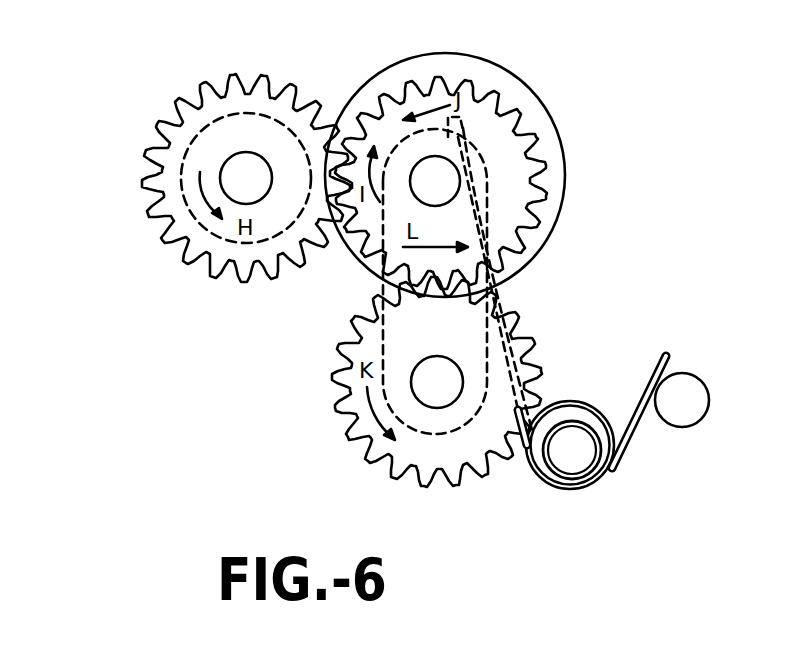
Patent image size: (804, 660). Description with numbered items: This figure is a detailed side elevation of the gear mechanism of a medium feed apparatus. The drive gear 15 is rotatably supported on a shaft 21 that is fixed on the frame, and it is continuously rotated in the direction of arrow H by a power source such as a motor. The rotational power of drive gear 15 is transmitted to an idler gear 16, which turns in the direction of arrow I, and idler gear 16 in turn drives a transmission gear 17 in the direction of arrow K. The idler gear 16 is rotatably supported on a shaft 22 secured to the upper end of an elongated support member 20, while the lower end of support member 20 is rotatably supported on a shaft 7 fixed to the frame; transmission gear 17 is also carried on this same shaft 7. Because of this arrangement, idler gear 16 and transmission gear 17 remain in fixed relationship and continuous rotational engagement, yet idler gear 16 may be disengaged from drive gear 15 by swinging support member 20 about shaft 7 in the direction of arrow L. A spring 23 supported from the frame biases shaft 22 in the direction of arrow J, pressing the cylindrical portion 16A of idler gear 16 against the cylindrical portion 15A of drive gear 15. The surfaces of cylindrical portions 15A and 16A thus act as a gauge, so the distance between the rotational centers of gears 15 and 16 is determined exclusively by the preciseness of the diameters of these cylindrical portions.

The drive gear 15 is at (215, 148).
The cylindrical portion of drive gear 15A is at (214, 118).
The shaft 21 is at (252, 183).
The idler gear 16 is at (507, 158).
The cylindrical portion of idler gear 16A is at (498, 70).
The shaft 22 is at (435, 168).
The elongated support member 20 is at (565, 227).
The transmission gear 17 is at (403, 450).
The shaft 7 is at (443, 388).
The spring 23 is at (633, 430).